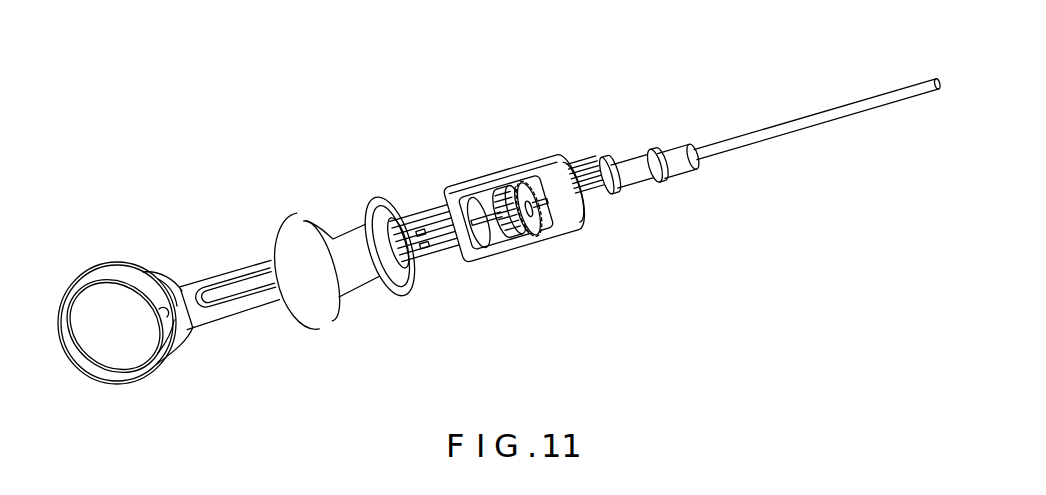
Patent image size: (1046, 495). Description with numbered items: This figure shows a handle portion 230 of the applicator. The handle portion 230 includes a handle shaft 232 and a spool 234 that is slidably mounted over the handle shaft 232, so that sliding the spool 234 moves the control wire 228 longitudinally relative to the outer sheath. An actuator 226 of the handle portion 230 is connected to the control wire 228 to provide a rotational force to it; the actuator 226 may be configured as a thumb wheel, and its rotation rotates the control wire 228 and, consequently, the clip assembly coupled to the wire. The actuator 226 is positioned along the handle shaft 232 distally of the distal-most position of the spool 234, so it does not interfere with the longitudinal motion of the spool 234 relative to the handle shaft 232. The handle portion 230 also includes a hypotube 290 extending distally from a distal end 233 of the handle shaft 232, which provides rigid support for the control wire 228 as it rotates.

The handle portion 230 is at (391, 120).
The handle shaft 232 is at (245, 260).
The spool 234 is at (357, 287).
The actuator 226 is at (526, 206).
The control wire 228 is at (526, 206).
The distal end 233 is at (680, 148).
The hypotube 290 is at (742, 142).